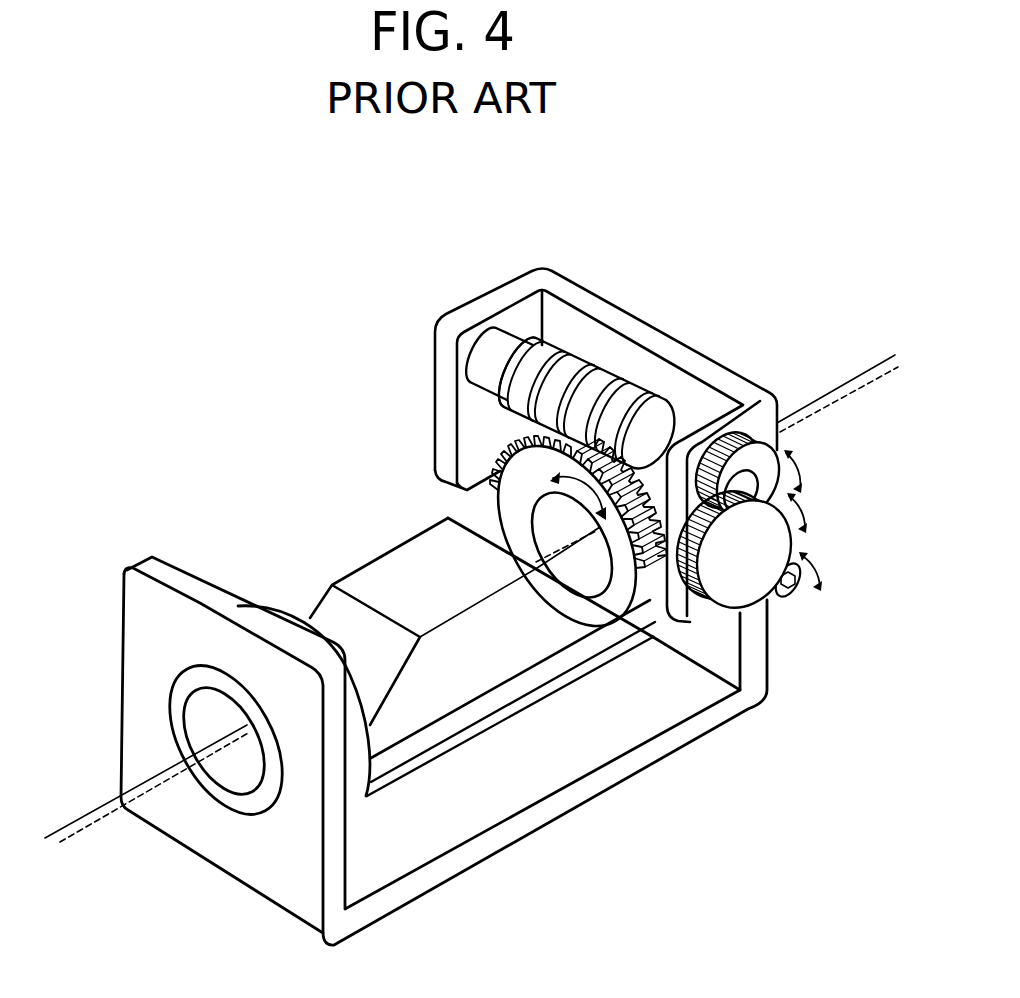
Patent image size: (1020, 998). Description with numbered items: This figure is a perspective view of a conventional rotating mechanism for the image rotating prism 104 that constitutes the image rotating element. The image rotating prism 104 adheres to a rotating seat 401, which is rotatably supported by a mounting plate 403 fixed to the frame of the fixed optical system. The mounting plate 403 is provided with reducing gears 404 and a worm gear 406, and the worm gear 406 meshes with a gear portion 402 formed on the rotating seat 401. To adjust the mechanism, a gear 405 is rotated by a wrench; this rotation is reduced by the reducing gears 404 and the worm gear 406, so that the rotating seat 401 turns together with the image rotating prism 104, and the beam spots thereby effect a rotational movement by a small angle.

The image rotating prism 104 is at (387, 567).
The rotating seat 401 is at (262, 607).
The gear portion 402 is at (500, 470).
The mounting plate 403 is at (540, 835).
The reducing gears 404 is at (767, 473).
The gear 405 is at (787, 597).
The worm gear 406 is at (620, 392).